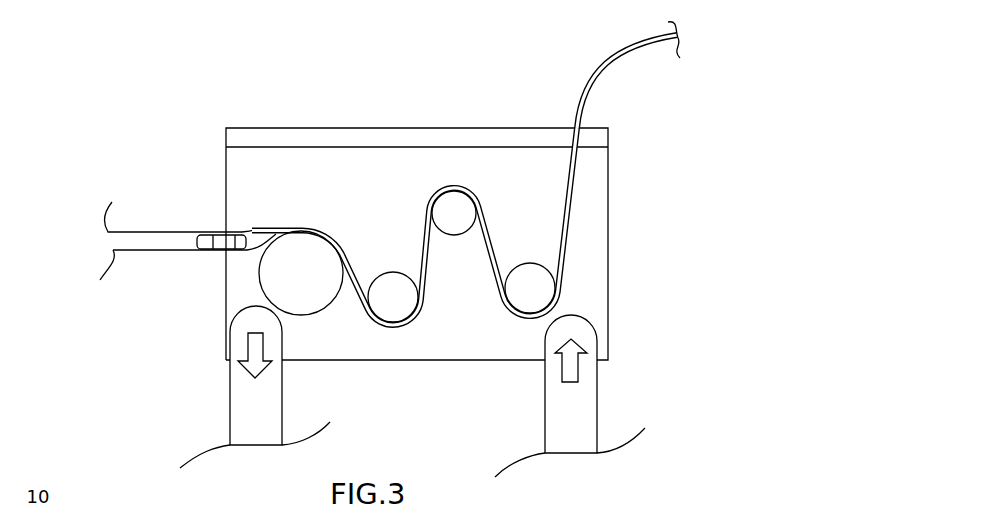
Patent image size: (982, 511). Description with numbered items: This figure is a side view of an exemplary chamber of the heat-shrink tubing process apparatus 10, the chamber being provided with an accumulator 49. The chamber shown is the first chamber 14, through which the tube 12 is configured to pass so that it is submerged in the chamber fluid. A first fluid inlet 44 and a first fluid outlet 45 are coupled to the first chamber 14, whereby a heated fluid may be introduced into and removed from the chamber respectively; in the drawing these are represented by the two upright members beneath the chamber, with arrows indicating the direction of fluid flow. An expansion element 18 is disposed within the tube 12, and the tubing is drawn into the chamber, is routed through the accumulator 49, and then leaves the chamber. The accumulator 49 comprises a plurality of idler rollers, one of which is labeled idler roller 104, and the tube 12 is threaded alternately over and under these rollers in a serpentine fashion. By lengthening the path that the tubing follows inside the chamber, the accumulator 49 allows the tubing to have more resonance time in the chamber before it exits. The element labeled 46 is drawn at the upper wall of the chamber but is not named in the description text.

The heat-shrink tubing process apparatus 10 is at (223, 88).
The tube 12 is at (603, 72).
The first chamber 14 is at (552, 140).
The expansion element 18 is at (237, 233).
The first fluid inlet 44 is at (562, 393).
The first fluid outlet 45 is at (260, 402).
The top plate 46 is at (398, 148).
The accumulator 49 is at (393, 297).
The idler roller 104 is at (550, 285).